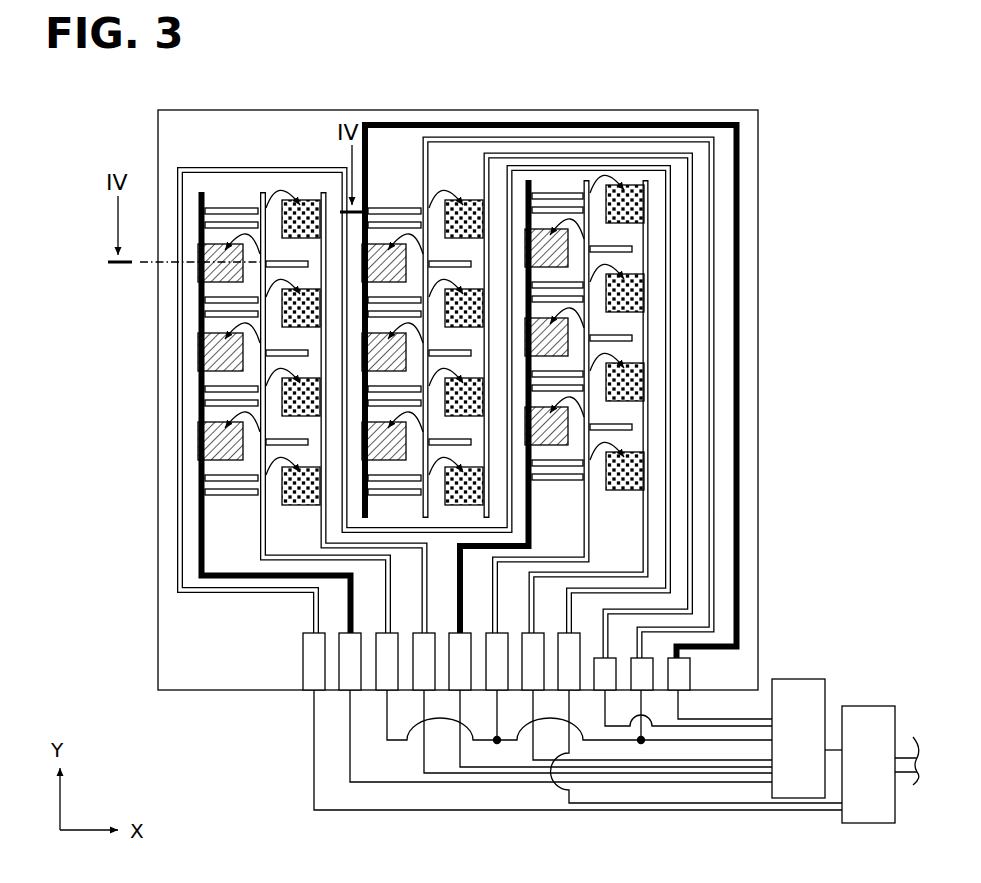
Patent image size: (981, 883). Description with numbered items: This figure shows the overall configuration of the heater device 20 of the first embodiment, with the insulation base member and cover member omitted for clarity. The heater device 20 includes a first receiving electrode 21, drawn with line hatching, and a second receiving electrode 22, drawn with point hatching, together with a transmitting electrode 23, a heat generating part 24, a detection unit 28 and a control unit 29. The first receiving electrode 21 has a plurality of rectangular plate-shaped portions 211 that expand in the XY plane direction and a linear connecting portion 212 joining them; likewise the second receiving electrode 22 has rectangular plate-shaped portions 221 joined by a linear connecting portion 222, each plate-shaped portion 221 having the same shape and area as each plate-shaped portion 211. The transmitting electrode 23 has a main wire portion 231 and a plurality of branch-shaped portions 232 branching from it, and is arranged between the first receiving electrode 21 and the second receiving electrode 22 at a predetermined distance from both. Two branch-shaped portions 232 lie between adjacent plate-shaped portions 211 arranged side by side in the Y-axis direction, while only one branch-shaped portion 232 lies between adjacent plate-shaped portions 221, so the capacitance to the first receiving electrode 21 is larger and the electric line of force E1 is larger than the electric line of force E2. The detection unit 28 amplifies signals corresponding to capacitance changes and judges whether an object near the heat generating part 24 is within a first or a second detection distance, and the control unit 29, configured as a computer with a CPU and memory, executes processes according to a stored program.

The heater device 20 is at (768, 88).
The first receiving electrode 21 is at (82, 304).
The plate-shaped portion 211 is at (220, 330).
The connecting portion 212 is at (206, 380).
The second receiving electrode 22 is at (82, 82).
The plate-shaped portion 221 is at (312, 202).
The connecting portion 222 is at (318, 256).
The transmitting electrode 23 is at (82, 487).
The main wire portion 231 is at (258, 533).
The branch-shaped portion 232 is at (223, 500).
The heat generating part 24 is at (177, 410).
The detection unit 28 is at (800, 679).
The control unit 29 is at (867, 706).
The electric line of force E1 is at (549, 228).
The electric line of force E2 is at (612, 185).